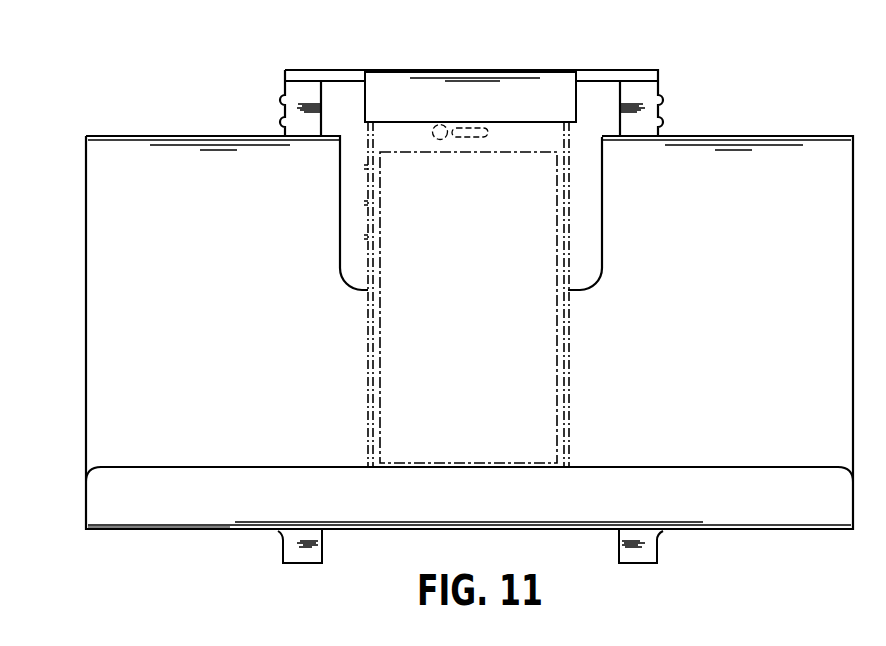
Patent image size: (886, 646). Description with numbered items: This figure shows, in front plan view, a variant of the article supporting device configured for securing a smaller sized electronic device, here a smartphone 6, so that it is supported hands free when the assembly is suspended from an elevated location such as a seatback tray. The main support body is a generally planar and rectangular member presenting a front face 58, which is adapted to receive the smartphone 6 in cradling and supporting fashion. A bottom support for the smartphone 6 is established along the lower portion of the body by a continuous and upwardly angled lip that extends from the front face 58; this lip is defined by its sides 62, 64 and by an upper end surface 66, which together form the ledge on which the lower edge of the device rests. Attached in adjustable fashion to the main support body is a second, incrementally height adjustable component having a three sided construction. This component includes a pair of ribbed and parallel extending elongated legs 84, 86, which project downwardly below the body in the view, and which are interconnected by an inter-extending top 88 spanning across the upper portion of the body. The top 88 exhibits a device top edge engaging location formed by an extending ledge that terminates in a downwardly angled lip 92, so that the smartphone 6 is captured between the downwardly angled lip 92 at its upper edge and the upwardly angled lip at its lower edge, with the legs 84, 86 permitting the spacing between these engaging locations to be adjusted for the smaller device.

The smartphone 6 is at (465, 308).
The front face 58 is at (229, 329).
The side of upwardly angled lip 62 is at (163, 532).
The side of upwardly angled lip 64 is at (108, 505).
The upper end surface 66 is at (187, 467).
The elongated leg 84 is at (640, 557).
The elongated leg 86 is at (303, 553).
The top 88 is at (332, 70).
The downwardly angled lip 92 is at (483, 111).